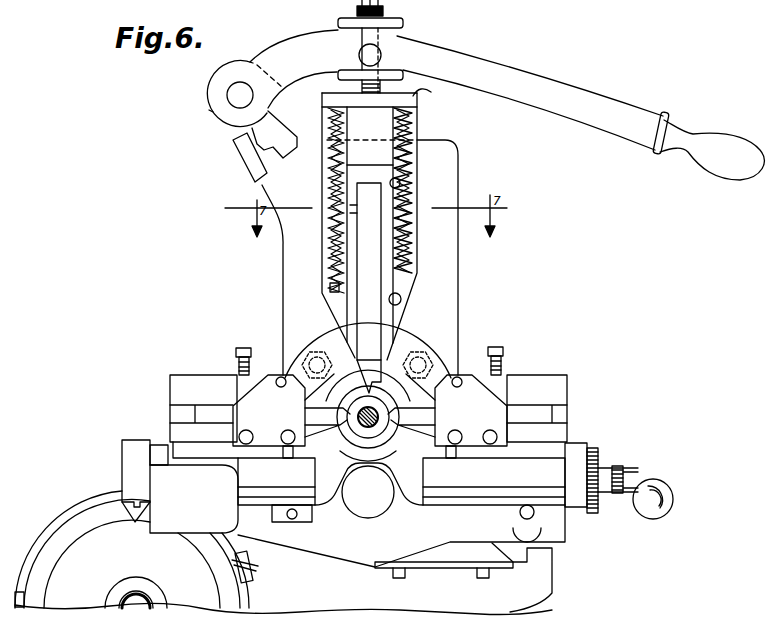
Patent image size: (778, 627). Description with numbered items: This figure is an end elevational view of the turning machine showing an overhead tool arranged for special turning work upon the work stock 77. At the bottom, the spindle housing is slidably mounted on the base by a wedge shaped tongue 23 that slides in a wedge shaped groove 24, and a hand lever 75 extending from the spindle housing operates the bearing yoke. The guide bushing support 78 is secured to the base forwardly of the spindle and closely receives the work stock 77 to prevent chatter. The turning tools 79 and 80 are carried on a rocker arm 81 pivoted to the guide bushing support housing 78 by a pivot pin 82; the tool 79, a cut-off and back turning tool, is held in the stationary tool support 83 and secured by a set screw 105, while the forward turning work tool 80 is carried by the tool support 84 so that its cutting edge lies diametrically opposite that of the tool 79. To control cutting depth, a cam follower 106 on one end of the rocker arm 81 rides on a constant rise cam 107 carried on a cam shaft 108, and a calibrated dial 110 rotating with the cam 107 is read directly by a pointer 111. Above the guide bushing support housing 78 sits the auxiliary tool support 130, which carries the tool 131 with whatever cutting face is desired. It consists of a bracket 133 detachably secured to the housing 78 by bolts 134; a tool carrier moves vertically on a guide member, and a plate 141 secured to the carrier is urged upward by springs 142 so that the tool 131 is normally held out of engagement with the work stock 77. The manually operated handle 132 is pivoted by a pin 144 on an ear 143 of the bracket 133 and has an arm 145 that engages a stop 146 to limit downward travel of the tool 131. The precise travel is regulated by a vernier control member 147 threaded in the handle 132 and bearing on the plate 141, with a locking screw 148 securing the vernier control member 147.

The wedge shaped tongue 23 is at (456, 555).
The groove 24 is at (503, 552).
The hand lever 75 is at (668, 472).
The work stock 77 is at (361, 424).
The guide bushing support 78 is at (413, 341).
The turning tool 79 is at (315, 413).
The work tool 80 is at (428, 409).
The rocker arm 81 is at (352, 553).
The pivot pin 82 is at (368, 508).
The tool support 83 is at (180, 391).
The tool support 84 is at (544, 386).
The set screw 105 is at (236, 352).
The cam follower 106 is at (148, 484).
The constant rise cam 107 is at (68, 549).
The cam shaft 108 is at (120, 597).
The dial 110 is at (98, 511).
The pointer 111 is at (252, 568).
The auxiliary tool support 130 is at (455, 190).
The tool 131 is at (383, 334).
The handle 132 is at (592, 84).
The bracket 133 is at (282, 305).
The bolts 134 is at (306, 352).
The plate 141 is at (436, 101).
The springs 142 is at (418, 135).
The ear 143 is at (212, 112).
The pin 144 is at (227, 93).
The arm 145 is at (283, 158).
The stop 146 is at (258, 186).
The vernier control member 147 is at (404, 22).
The locking screw 148 is at (382, 53).